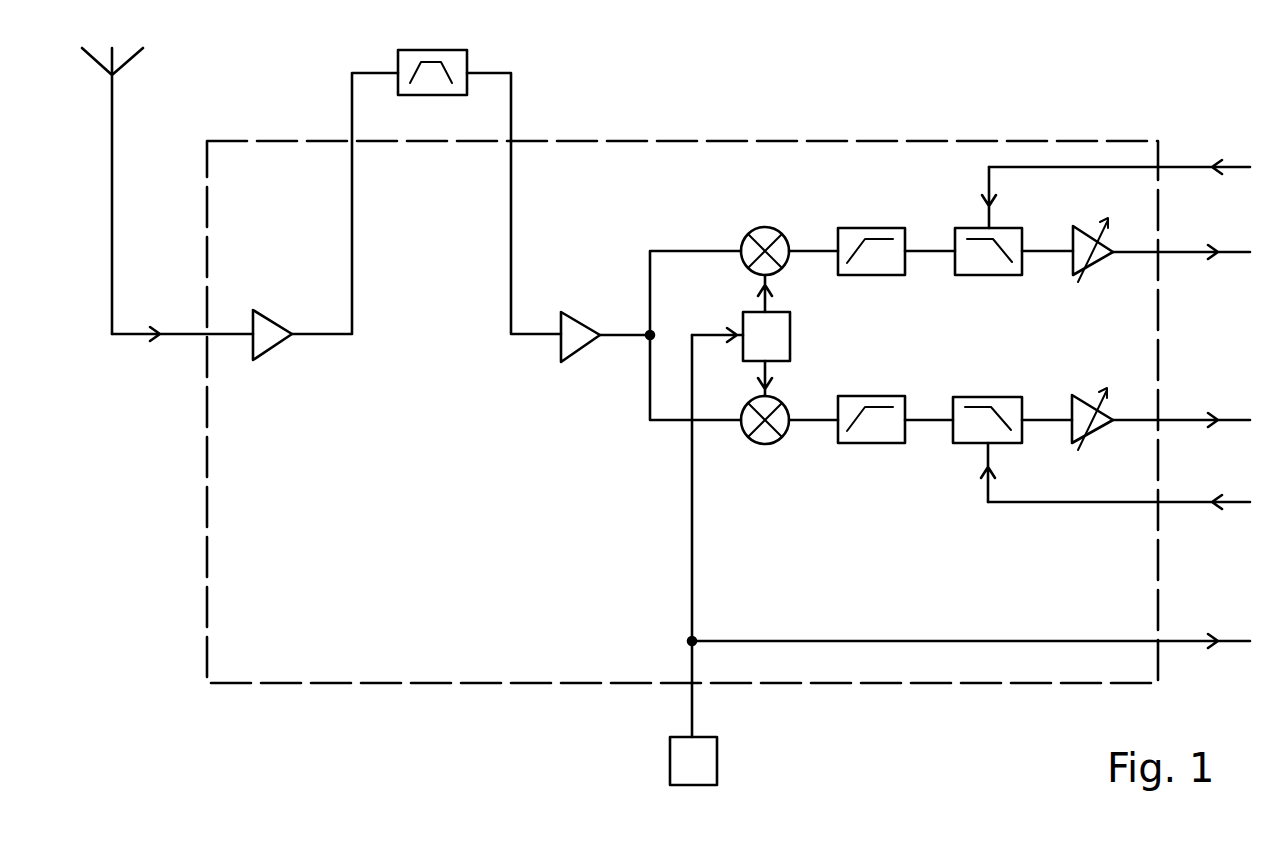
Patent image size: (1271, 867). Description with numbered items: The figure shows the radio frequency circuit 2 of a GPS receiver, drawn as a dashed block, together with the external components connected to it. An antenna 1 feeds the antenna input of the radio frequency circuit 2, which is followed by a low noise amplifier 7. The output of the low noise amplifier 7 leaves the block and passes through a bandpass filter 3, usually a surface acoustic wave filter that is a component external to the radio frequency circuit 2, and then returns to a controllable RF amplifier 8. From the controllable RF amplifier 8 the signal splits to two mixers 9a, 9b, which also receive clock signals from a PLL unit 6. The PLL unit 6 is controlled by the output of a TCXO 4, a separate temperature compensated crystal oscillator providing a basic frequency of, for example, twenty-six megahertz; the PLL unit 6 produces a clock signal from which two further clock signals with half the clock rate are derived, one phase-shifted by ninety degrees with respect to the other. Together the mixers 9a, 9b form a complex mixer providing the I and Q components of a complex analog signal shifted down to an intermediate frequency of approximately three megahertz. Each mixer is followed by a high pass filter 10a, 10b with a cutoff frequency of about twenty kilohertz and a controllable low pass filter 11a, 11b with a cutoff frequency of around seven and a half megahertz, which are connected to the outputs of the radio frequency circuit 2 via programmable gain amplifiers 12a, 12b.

The antenna 1 is at (123, 57).
The radio frequency circuit 2 is at (255, 700).
The bandpass filter 3 is at (449, 55).
The TCXO 4 is at (717, 755).
The PLL unit 6 is at (790, 329).
The low noise amplifier 7 is at (273, 341).
The controllable RF amplifier 8 is at (578, 343).
The mixer 9a is at (768, 237).
The mixer 9b is at (768, 442).
The high pass filter 10a is at (872, 230).
The high pass filter 10b is at (870, 438).
The controllable low pass filter 11a is at (1010, 237).
The controllable low pass filter 11b is at (1010, 438).
The programmable gain amplifier 12a is at (1080, 234).
The programmable gain amplifier 12b is at (1102, 424).